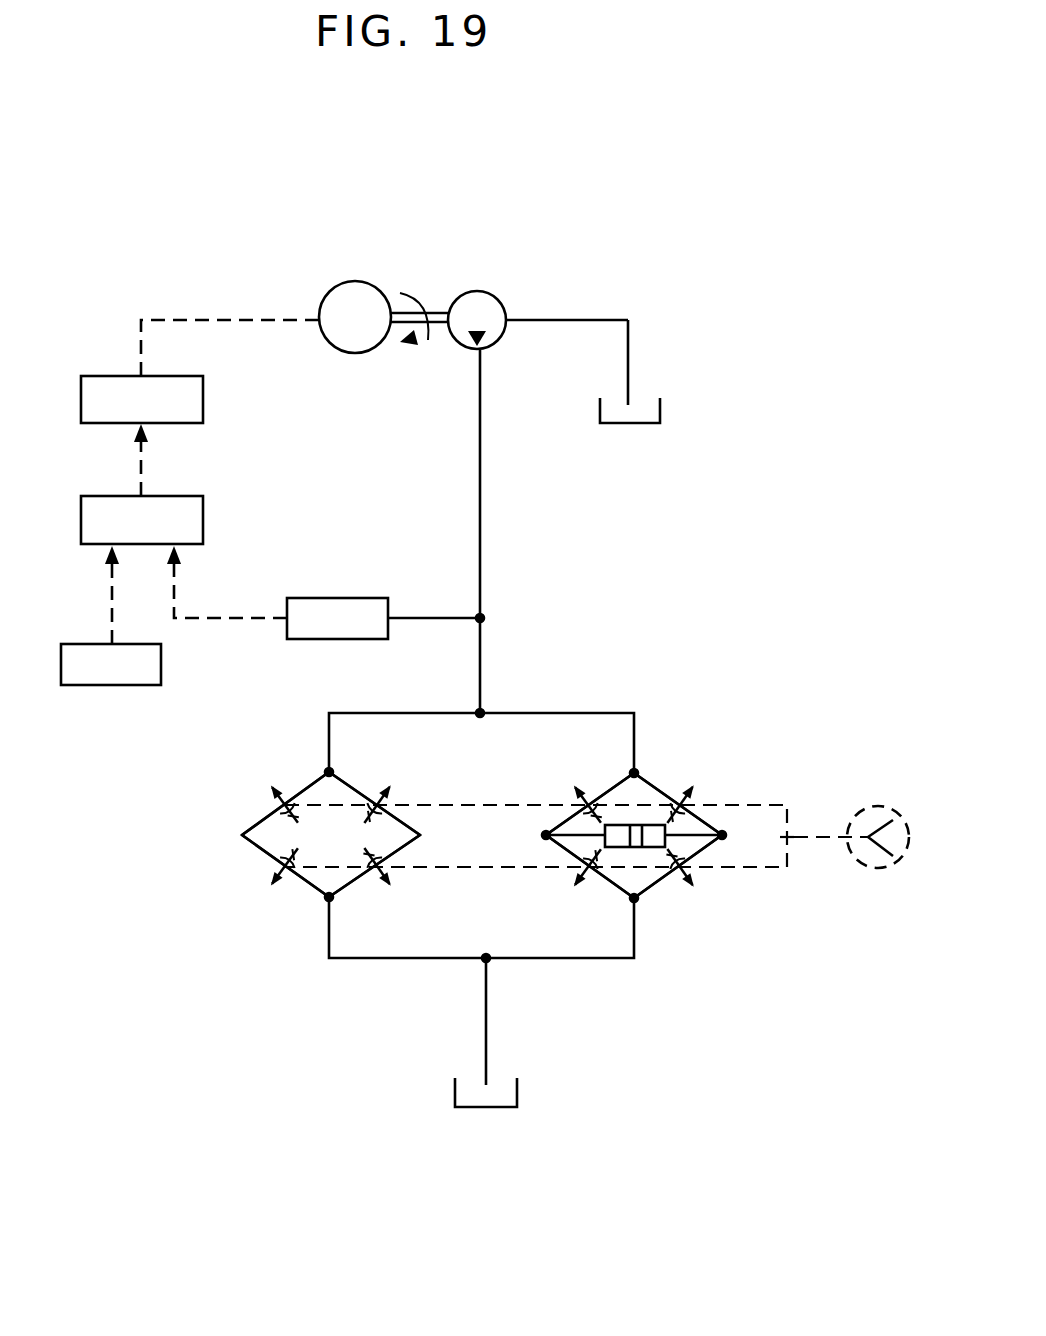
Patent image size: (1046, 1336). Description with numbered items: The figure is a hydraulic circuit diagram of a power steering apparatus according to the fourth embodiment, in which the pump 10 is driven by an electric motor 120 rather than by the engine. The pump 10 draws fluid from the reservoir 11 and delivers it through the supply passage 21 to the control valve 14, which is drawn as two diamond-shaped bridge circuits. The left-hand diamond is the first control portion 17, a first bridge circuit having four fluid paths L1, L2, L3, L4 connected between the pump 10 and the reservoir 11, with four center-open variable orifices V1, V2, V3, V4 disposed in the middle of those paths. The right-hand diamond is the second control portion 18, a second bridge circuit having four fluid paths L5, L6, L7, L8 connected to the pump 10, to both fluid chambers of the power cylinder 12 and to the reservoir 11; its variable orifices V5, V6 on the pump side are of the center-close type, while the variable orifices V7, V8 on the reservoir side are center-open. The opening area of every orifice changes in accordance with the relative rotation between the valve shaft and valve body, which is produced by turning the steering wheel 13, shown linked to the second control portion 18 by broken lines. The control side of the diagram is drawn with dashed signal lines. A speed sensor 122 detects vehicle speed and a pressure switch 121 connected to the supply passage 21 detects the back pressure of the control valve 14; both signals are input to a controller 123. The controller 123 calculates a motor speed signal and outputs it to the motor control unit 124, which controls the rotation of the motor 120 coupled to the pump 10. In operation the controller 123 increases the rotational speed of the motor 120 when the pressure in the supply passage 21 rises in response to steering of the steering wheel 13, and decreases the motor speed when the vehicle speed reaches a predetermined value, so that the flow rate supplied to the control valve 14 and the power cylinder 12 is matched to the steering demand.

The pump 10 is at (486, 291).
The reservoir 11 is at (648, 423).
The power cylinder 12 is at (650, 848).
The steering wheel 13 is at (880, 806).
The control valve 14 is at (655, 700).
The first control portion 17 is at (232, 820).
The second control portion 18 is at (722, 817).
The supply passage 21 is at (484, 526).
The electric motor 120 is at (351, 281).
The pressure switch 121 is at (343, 597).
The speed sensor 122 is at (84, 688).
The controller 123 is at (204, 513).
The motor control unit 124 is at (204, 404).
The fluid path L1 is at (308, 781).
The fluid path L2 is at (345, 786).
The fluid path L3 is at (308, 901).
The fluid path L4 is at (345, 888).
The fluid path L5 is at (608, 786).
The fluid path L6 is at (652, 787).
The fluid path L7 is at (617, 886).
The fluid path L8 is at (647, 898).
The variable orifice V1 is at (269, 800).
The variable orifice V2 is at (398, 798).
The variable orifice V3 is at (266, 876).
The variable orifice V4 is at (397, 877).
The variable orifice V5 is at (571, 798).
The variable orifice V6 is at (700, 798).
The variable orifice V7 is at (571, 878).
The variable orifice V8 is at (700, 878).